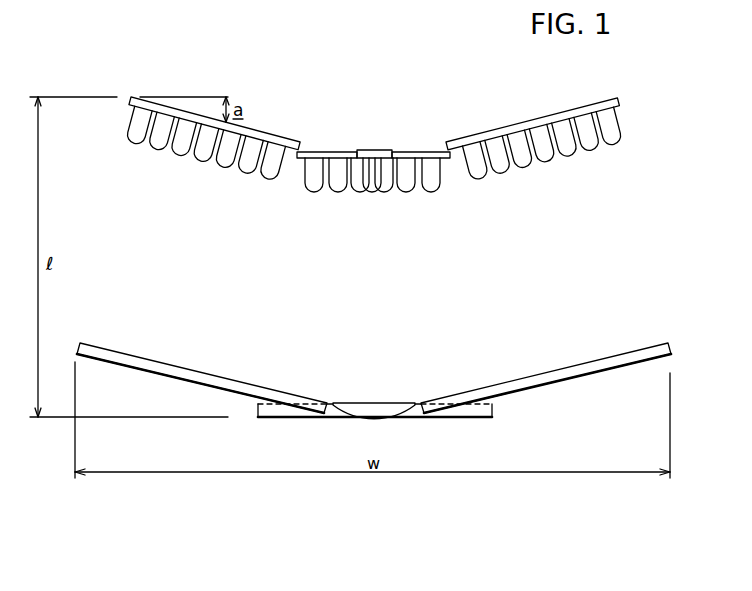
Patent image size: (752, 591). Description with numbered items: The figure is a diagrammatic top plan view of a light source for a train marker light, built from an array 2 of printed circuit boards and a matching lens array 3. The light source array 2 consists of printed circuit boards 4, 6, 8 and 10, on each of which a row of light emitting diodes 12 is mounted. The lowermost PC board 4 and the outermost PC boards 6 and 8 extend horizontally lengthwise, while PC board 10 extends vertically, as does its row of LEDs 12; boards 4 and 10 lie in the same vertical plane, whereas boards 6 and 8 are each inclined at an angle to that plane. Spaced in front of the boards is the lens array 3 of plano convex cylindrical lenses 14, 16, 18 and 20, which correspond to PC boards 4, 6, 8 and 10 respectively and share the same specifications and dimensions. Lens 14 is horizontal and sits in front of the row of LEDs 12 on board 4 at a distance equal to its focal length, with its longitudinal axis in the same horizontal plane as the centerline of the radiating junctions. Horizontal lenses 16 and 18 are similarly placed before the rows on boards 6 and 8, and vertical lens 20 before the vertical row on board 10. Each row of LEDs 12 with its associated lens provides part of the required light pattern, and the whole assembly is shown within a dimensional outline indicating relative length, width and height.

The array of printed circuit boards 2 is at (150, 185).
The lens array 3 is at (557, 414).
The lowermost printed circuit board 4 is at (342, 150).
The outermost printed circuit board 6 is at (280, 136).
The outermost printed circuit board 8 is at (472, 133).
The vertical printed circuit board 10 is at (375, 150).
The light emitting diodes 12 is at (372, 191).
The cylindrical lens 14 is at (483, 418).
The cylindrical lens 16 is at (173, 377).
The cylindrical lens 18 is at (632, 363).
The vertical cylindrical lens 20 is at (368, 407).